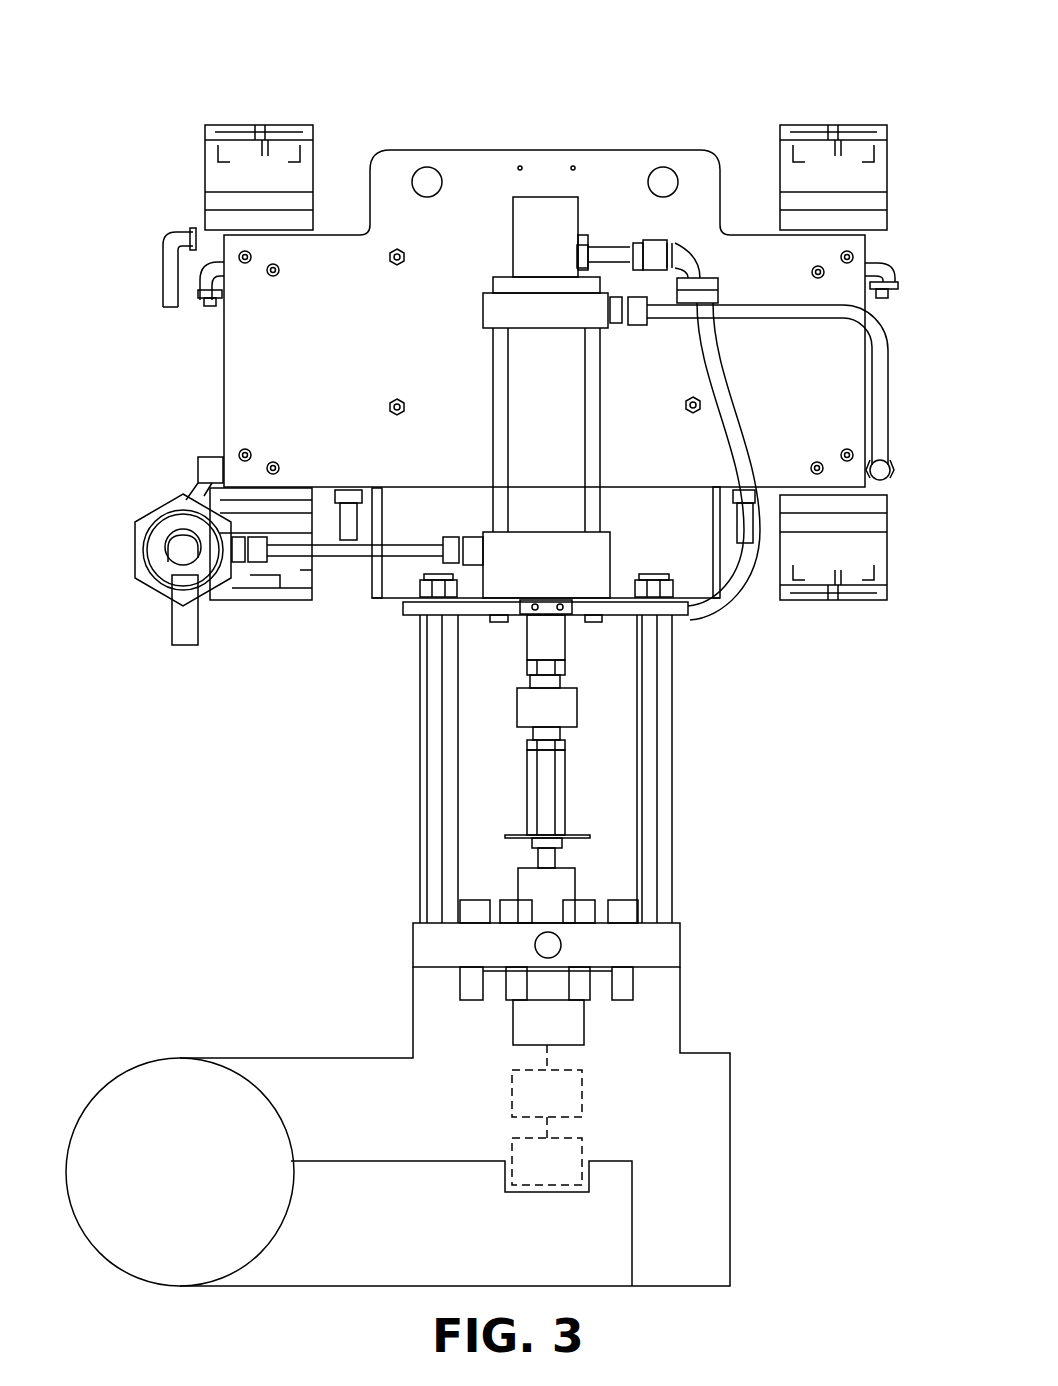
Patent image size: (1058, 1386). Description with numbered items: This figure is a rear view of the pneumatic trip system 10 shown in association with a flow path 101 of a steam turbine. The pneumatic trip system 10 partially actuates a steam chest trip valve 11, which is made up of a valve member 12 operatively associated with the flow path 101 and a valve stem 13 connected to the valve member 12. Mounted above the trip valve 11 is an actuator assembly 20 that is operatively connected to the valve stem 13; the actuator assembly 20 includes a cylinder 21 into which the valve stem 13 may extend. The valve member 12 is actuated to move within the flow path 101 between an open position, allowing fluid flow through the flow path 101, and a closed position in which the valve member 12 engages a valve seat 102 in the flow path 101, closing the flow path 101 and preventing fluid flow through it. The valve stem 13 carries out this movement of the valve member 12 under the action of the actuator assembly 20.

The pneumatic trip system 10 is at (503, 673).
The actuator assembly 20 is at (389, 325).
The cylinder 21 is at (490, 413).
The steam chest trip valve 11 is at (577, 807).
The valve stem 13 is at (537, 860).
The valve member 12 is at (584, 1030).
The flow path 101 is at (471, 1150).
The valve seat 102 is at (557, 1192).